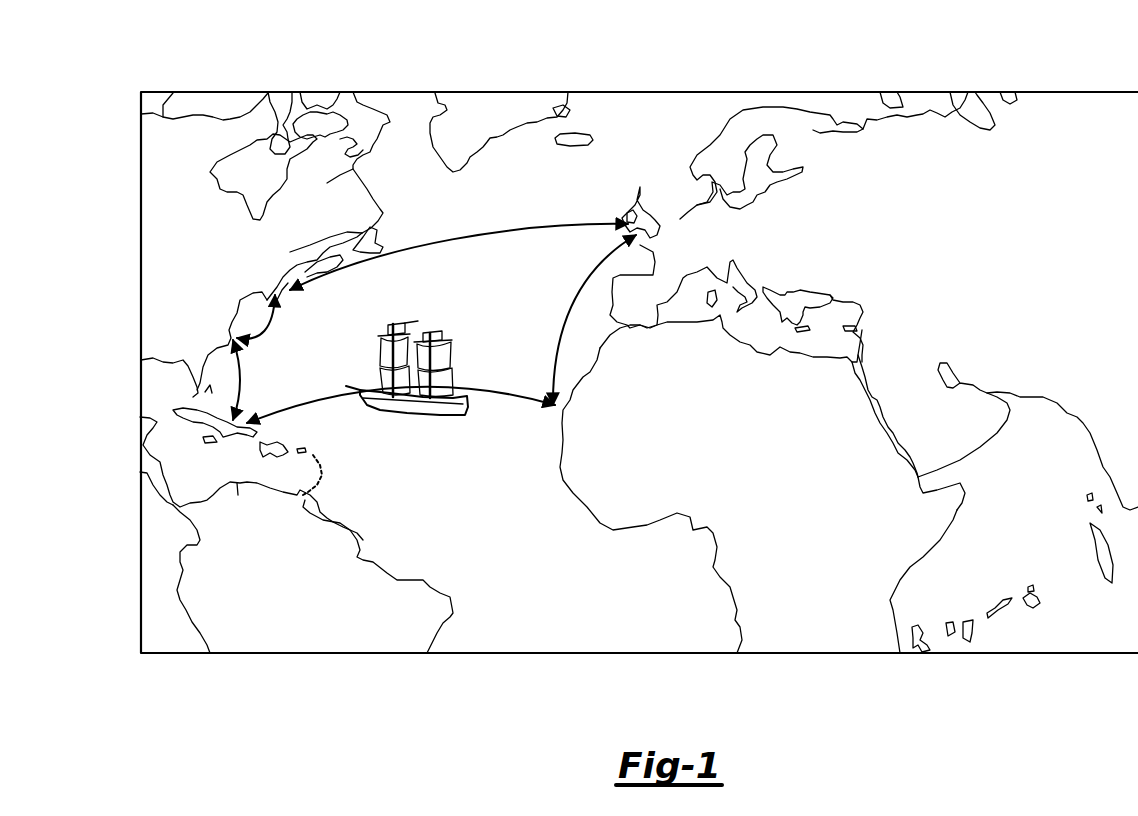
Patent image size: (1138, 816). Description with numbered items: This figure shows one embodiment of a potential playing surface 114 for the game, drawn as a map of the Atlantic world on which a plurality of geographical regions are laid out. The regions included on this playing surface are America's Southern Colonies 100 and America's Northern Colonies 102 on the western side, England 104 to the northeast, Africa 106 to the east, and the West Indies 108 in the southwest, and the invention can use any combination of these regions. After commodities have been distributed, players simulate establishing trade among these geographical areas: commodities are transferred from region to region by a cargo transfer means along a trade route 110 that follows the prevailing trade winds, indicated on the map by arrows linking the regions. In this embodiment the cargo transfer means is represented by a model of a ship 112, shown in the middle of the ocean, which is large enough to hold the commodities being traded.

The America's Southern Colonies 100 is at (221, 331).
The America's Northern Colonies 102 is at (276, 266).
The England 104 is at (688, 193).
The Africa 106 is at (609, 426).
The West Indies 108 is at (228, 476).
The trade route 110 is at (480, 228).
The ship 112 is at (440, 418).
The playing surface 114 is at (313, 80).